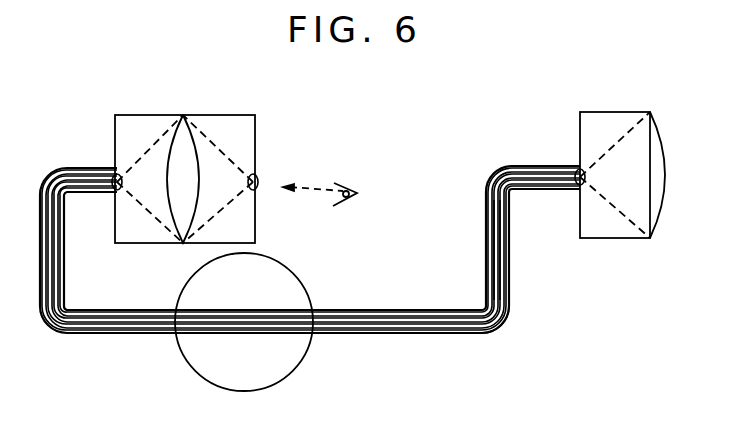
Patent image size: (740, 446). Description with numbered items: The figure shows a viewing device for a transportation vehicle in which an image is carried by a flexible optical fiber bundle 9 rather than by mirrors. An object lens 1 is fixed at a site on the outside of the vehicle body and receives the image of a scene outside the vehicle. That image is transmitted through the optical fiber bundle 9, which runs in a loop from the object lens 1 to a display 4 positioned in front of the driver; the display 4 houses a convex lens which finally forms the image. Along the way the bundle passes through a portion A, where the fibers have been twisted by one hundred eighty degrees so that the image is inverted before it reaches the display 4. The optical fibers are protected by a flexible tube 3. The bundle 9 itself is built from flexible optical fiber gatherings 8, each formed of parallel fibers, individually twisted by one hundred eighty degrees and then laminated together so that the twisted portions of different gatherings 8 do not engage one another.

The object lens 1 is at (594, 111).
The flexible tube 3 is at (507, 272).
The display 4 is at (247, 106).
The flexible optical fiber gathering 8 is at (360, 315).
The flexible optical fiber bundle 9 is at (500, 330).
The portion A is at (303, 350).